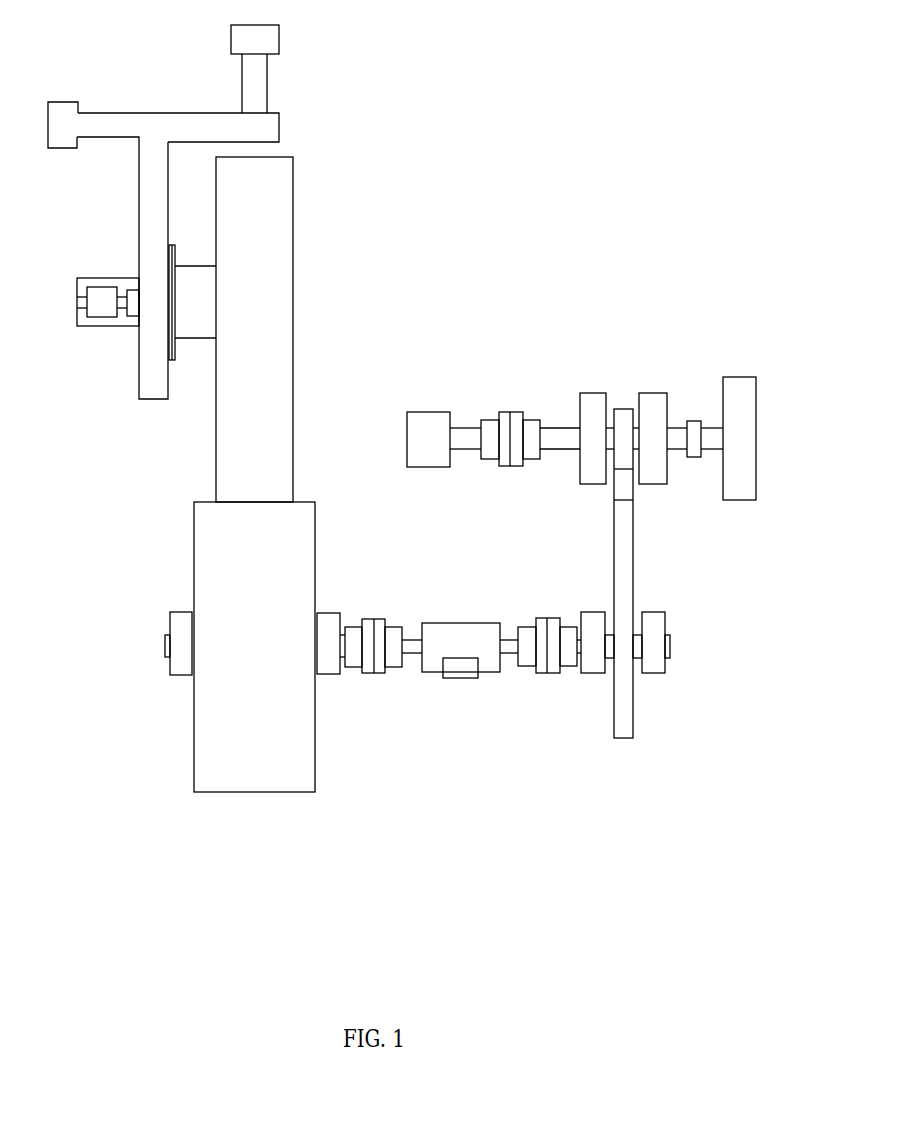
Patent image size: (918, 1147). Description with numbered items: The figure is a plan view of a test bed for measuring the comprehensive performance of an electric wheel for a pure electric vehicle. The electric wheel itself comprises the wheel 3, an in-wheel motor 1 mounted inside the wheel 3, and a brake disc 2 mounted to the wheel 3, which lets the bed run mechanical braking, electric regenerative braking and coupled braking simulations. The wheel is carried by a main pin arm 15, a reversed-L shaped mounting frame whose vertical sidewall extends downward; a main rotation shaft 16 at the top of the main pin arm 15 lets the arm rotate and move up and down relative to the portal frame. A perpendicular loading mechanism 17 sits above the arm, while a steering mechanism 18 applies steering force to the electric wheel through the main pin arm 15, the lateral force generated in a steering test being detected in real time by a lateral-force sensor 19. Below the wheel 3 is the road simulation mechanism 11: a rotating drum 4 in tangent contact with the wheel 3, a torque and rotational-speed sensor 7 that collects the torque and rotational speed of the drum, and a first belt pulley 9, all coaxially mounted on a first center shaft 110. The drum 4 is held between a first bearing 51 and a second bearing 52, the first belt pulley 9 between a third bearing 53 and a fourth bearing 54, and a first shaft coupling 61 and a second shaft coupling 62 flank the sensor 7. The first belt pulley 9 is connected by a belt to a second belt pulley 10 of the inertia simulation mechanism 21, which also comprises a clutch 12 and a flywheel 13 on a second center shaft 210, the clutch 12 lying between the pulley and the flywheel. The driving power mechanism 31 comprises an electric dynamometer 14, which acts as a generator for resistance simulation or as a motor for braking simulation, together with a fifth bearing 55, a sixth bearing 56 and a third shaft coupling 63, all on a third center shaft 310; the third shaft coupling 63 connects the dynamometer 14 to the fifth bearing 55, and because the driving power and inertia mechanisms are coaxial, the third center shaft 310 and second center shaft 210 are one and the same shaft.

The in-wheel motor 1 is at (195, 308).
The brake disc 2 is at (170, 247).
The wheel 3 is at (255, 187).
The rotating drum 4 is at (285, 752).
The torque and rotational-speed sensor 7 is at (493, 665).
The first belt pulley 9 is at (621, 702).
The second belt pulley 10 is at (628, 455).
The road simulation mechanism 11 is at (132, 888).
The clutch 12 is at (694, 447).
The flywheel 13 is at (753, 477).
The electric dynamometer 14 is at (427, 433).
The main pin arm 15 is at (255, 128).
The main rotation shaft 16 is at (253, 90).
The perpendicular loading mechanism 17 is at (255, 38).
The steering mechanism 18 is at (70, 120).
The lateral-force sensor 19 is at (93, 298).
The inertia simulation mechanism 21 is at (703, 612).
The driving power mechanism 31 is at (363, 348).
The first bearing 51 is at (182, 663).
The second bearing 52 is at (328, 640).
The third bearing 53 is at (593, 640).
The fourth bearing 54 is at (653, 640).
The fifth bearing 55 is at (591, 440).
The sixth bearing 56 is at (652, 443).
The first shaft coupling 61 is at (375, 650).
The second shaft coupling 62 is at (550, 632).
The third shaft coupling 63 is at (510, 450).
The first center shaft 110 is at (165, 648).
The second center shaft 210 is at (712, 452).
The third center shaft 310 is at (470, 425).